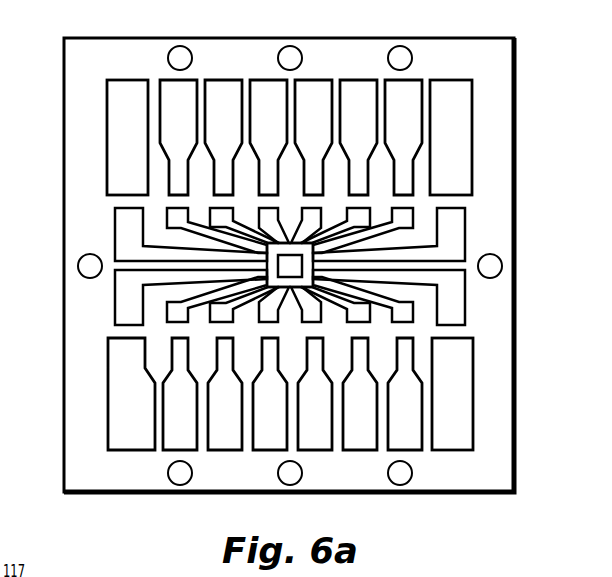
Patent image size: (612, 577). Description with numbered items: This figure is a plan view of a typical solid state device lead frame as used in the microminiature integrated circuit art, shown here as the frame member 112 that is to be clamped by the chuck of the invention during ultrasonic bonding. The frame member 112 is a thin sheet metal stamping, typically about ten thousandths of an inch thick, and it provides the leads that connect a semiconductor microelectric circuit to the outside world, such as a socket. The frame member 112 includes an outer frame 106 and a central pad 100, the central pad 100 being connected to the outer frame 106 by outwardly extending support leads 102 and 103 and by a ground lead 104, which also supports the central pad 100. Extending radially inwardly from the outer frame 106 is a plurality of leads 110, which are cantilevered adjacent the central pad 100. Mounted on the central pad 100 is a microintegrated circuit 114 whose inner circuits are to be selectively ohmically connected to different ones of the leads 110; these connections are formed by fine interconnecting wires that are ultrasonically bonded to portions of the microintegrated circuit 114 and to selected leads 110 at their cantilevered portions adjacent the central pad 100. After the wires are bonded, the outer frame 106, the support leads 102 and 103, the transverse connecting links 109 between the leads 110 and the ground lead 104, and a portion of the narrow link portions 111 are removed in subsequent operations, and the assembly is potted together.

The central pad 100 is at (370, 226).
The support lead 102 is at (382, 263).
The support lead 103 is at (137, 262).
The ground lead 104 is at (289, 292).
The outer frame 106 is at (498, 233).
The transverse connecting links 109 is at (352, 202).
The leads 110 is at (158, 228).
The narrow link portions 111 is at (150, 122).
The frame member 112 is at (526, 179).
The microintegrated circuit 114 is at (288, 268).